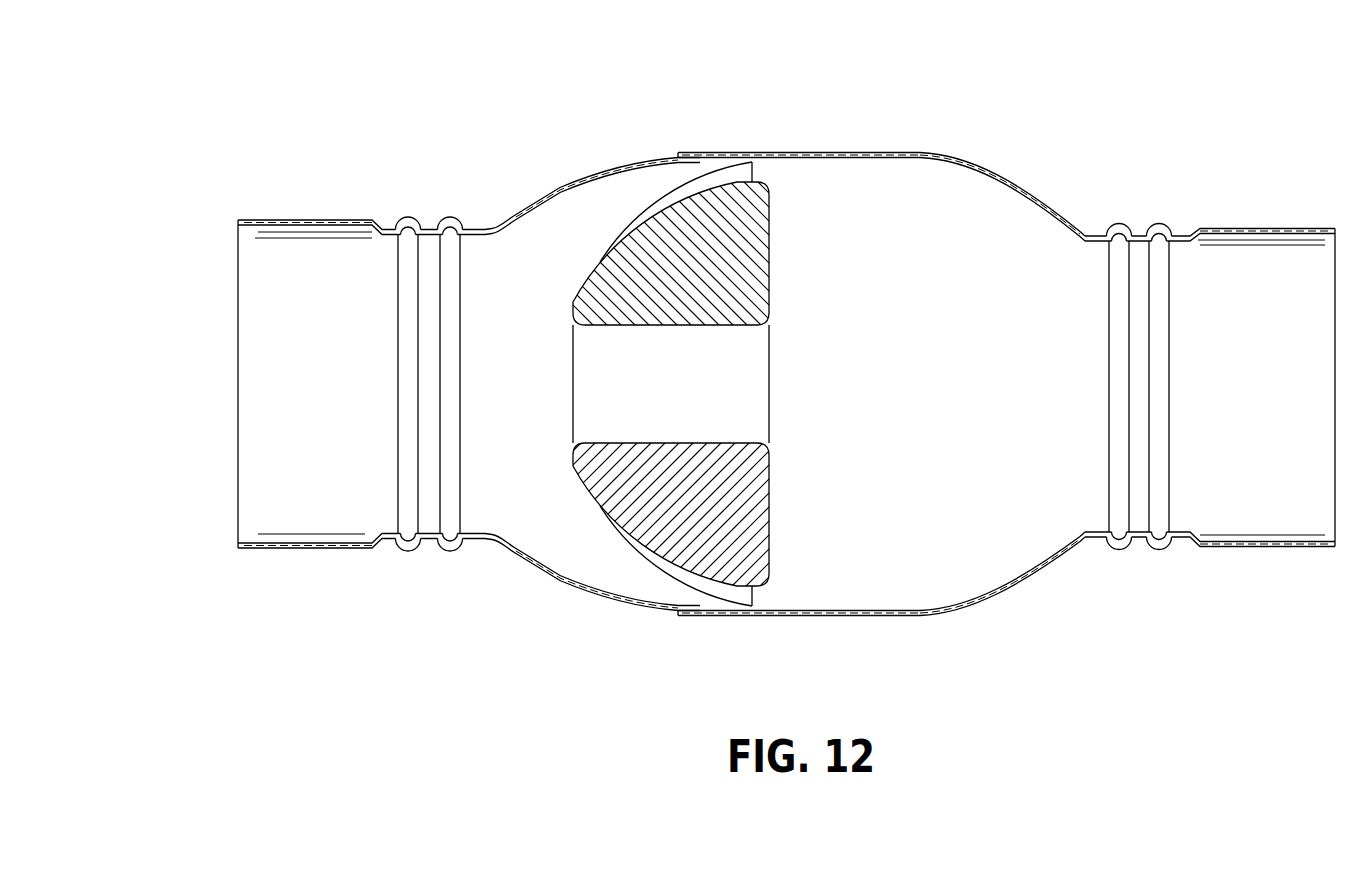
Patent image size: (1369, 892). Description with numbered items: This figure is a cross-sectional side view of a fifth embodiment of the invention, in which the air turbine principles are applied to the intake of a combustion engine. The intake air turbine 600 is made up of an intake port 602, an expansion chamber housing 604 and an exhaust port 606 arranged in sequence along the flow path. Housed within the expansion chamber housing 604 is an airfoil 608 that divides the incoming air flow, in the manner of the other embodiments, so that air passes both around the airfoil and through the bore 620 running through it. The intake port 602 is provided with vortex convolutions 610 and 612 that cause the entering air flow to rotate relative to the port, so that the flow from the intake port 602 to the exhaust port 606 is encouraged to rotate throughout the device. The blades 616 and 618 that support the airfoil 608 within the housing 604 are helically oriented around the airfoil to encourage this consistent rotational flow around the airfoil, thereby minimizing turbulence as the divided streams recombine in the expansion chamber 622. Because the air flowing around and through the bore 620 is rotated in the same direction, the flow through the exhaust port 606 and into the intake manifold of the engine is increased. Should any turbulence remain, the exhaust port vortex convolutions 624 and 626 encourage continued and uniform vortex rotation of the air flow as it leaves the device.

The intake air turbine 600 is at (775, 363).
The intake port 602 is at (372, 418).
The expansion chamber housing 604 is at (903, 618).
The exhaust port 606 is at (1215, 378).
The airfoil 608 is at (608, 253).
The vortex convolution 610 is at (405, 548).
The vortex convolution 612 is at (449, 548).
The blade 616 is at (735, 175).
The blade 618 is at (732, 597).
The bore 620 is at (755, 370).
The expansion chamber 622 is at (978, 520).
The exhaust port vortex convolution 624 is at (1119, 230).
The exhaust port vortex convolution 626 is at (1159, 230).